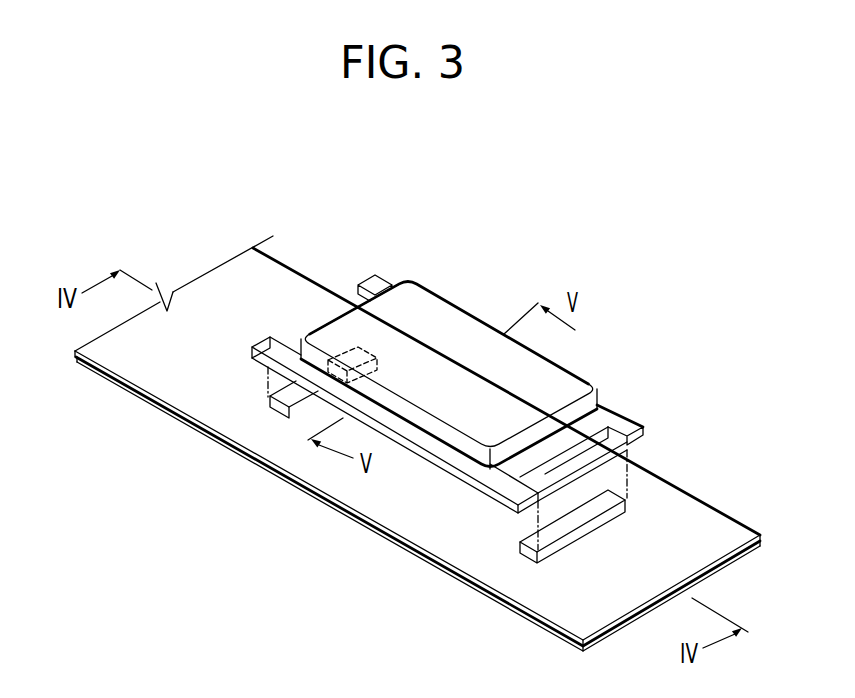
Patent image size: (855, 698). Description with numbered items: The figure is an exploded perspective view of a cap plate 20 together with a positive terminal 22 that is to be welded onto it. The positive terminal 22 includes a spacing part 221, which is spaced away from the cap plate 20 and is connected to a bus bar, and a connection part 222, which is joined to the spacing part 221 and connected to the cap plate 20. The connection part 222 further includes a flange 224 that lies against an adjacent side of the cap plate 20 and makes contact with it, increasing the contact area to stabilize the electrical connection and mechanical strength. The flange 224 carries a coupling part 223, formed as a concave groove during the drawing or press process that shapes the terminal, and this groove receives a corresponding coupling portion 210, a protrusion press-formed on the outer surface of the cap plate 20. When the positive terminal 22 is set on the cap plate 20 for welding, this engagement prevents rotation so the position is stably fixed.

The cap plate 20 is at (713, 540).
The corresponding coupling portion 210 is at (633, 500).
The positive terminal 22 is at (482, 405).
The spacing part 221 is at (427, 325).
The connection part 222 is at (577, 412).
The coupling part 223 is at (577, 459).
The flange 224 is at (627, 428).